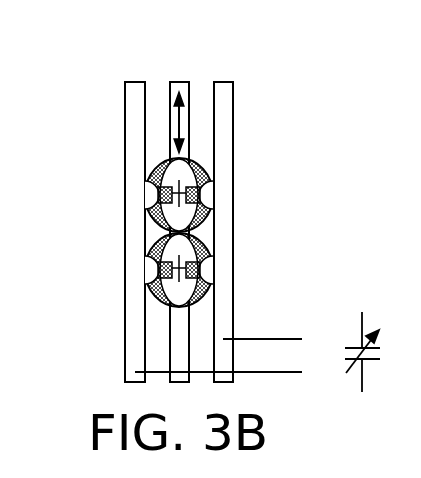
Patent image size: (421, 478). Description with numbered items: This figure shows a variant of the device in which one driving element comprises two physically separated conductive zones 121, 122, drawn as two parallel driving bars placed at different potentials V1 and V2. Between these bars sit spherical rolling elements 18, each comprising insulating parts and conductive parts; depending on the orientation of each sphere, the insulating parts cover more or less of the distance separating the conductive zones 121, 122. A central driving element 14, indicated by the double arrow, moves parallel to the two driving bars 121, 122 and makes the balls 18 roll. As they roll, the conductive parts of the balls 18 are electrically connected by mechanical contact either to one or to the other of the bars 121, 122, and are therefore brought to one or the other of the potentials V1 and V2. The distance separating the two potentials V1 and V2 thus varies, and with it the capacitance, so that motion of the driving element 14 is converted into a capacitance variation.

The driving element 14 is at (181, 82).
The spherical rolling element 18 is at (186, 186).
The conductive zone 121 is at (225, 118).
The conductive zone 122 is at (135, 120).
The potential V1 is at (278, 341).
The potential V2 is at (234, 375).